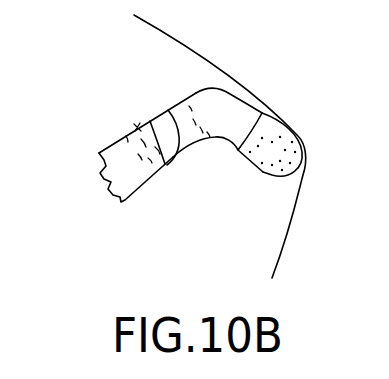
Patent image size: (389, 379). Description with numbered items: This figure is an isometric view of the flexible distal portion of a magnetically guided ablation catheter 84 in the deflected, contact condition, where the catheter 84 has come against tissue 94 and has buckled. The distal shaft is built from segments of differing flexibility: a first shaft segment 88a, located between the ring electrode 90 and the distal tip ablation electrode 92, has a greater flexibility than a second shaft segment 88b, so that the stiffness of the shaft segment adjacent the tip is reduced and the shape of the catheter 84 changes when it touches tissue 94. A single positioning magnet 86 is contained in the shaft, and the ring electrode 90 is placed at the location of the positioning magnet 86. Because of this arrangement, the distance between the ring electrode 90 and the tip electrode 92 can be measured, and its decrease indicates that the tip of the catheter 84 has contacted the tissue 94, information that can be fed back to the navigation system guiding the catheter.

The magnetically guided ablation catheter 84 is at (159, 72).
The positioning magnet 86 is at (128, 117).
The first shaft segment 88a is at (223, 128).
The second shaft segment 88b is at (110, 153).
The ring electrode 90 is at (183, 163).
The distal tip ablation electrode 92 is at (281, 169).
The tissue 94 is at (290, 217).